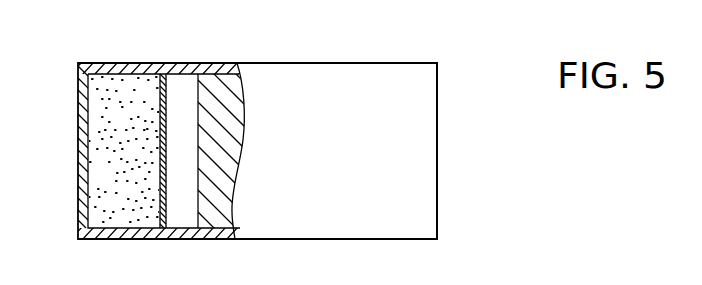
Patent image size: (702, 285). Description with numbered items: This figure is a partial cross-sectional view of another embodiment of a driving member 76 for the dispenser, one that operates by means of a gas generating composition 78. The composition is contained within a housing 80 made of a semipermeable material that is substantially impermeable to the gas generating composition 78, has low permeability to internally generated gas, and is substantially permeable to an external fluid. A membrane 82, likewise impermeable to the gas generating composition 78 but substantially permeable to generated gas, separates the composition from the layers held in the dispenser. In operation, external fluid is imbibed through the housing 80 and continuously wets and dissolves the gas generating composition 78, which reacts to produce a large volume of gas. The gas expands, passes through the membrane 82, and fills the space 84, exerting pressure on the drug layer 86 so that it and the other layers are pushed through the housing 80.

The driving member 76 is at (148, 61).
The housing 80 is at (91, 63).
The gas generating composition 78 is at (88, 176).
The membrane 82 is at (165, 205).
The space 84 is at (190, 64).
The drug layer 86 is at (221, 230).